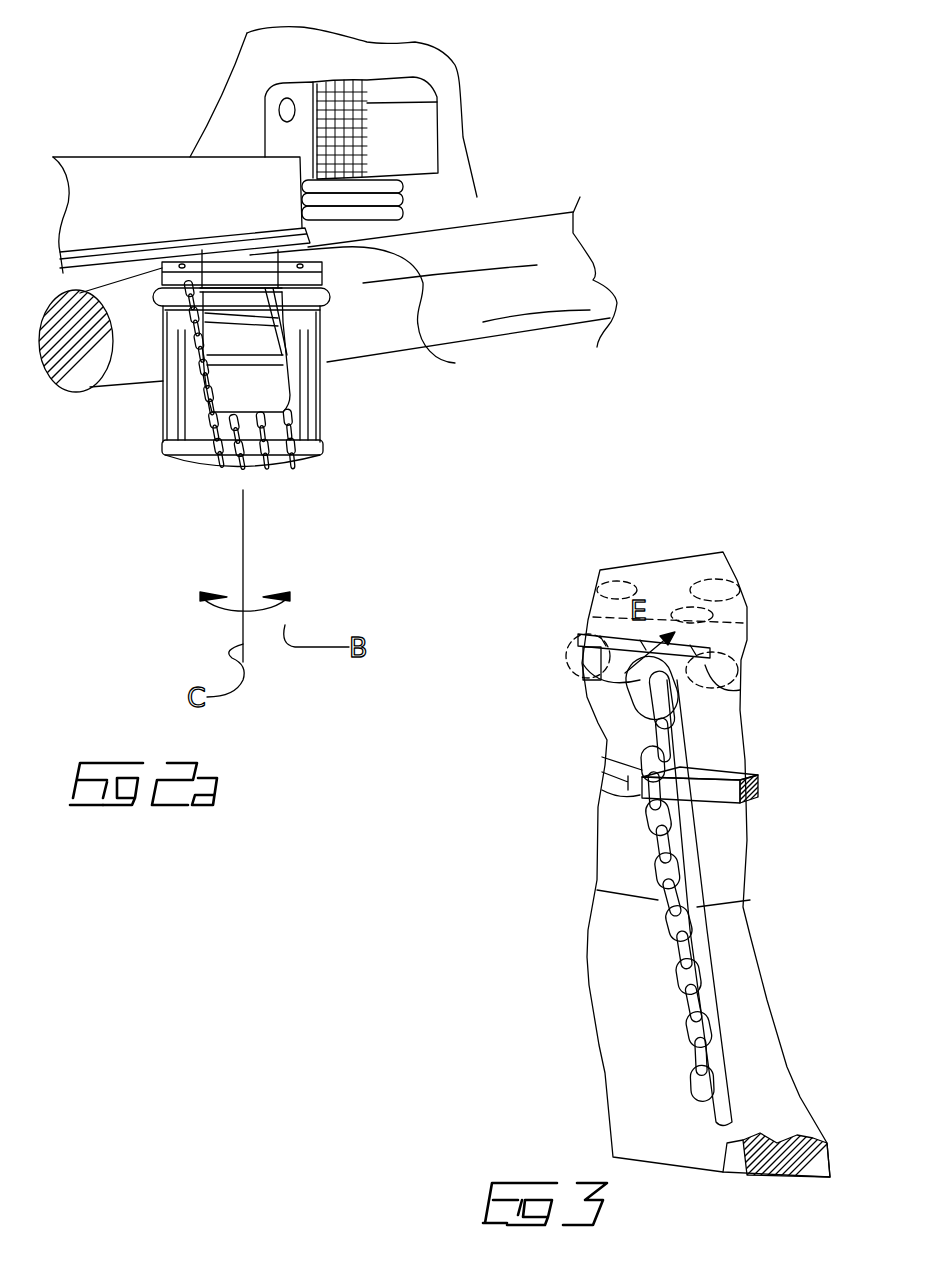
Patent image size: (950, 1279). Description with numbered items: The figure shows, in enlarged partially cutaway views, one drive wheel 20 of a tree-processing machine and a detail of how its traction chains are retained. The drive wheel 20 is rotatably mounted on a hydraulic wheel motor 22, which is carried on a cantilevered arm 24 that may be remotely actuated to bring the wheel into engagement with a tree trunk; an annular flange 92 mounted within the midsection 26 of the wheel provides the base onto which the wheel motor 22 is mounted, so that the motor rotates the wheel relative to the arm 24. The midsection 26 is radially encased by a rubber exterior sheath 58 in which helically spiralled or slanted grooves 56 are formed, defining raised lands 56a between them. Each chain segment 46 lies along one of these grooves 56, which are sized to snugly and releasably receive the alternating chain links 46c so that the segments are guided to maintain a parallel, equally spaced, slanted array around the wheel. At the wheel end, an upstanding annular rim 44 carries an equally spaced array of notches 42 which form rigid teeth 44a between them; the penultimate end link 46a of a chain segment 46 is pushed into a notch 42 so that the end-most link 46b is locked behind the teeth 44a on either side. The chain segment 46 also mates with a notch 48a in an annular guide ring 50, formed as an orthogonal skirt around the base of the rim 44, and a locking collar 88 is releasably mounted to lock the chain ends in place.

In FIG. 2a, the drive wheel 20 is at (299, 418).
In FIG. 2a, the hydraulic wheel motor 22 is at (455, 363).
In FIG. 2a, the cantilevered arm 24 is at (105, 185).
In FIG. 3, the midsection 26 is at (677, 837).
In FIG. 3, the notch 42 is at (593, 657).
In FIG. 3, the upstanding annular rim 44 is at (664, 698).
In FIG. 3, the upstanding rigid teeth 44a is at (607, 693).
In FIG. 2a, the chain segment 46 is at (325, 423).
In FIG. 3, the chain segment 46 is at (659, 862).
In FIG. 3, the penultimate end link 46a is at (568, 637).
In FIG. 3, the end-most link 46b is at (730, 665).
In FIG. 3, the alternating chain links 46c is at (663, 910).
In FIG. 3, the notch 48a is at (637, 790).
In FIG. 3, the annular guide ring 50 is at (772, 785).
In FIG. 3, the helically spiralled groove 56 is at (730, 1143).
In FIG. 3, the raised land 56a is at (610, 1020).
In FIG. 2a, the rubber exterior sheath 58 is at (312, 386).
In FIG. 3, the rubber exterior sheath 58 is at (800, 1130).
In FIG. 3, the locking collar 88 is at (660, 577).
In FIG. 2a, the annular flange 92 is at (326, 342).